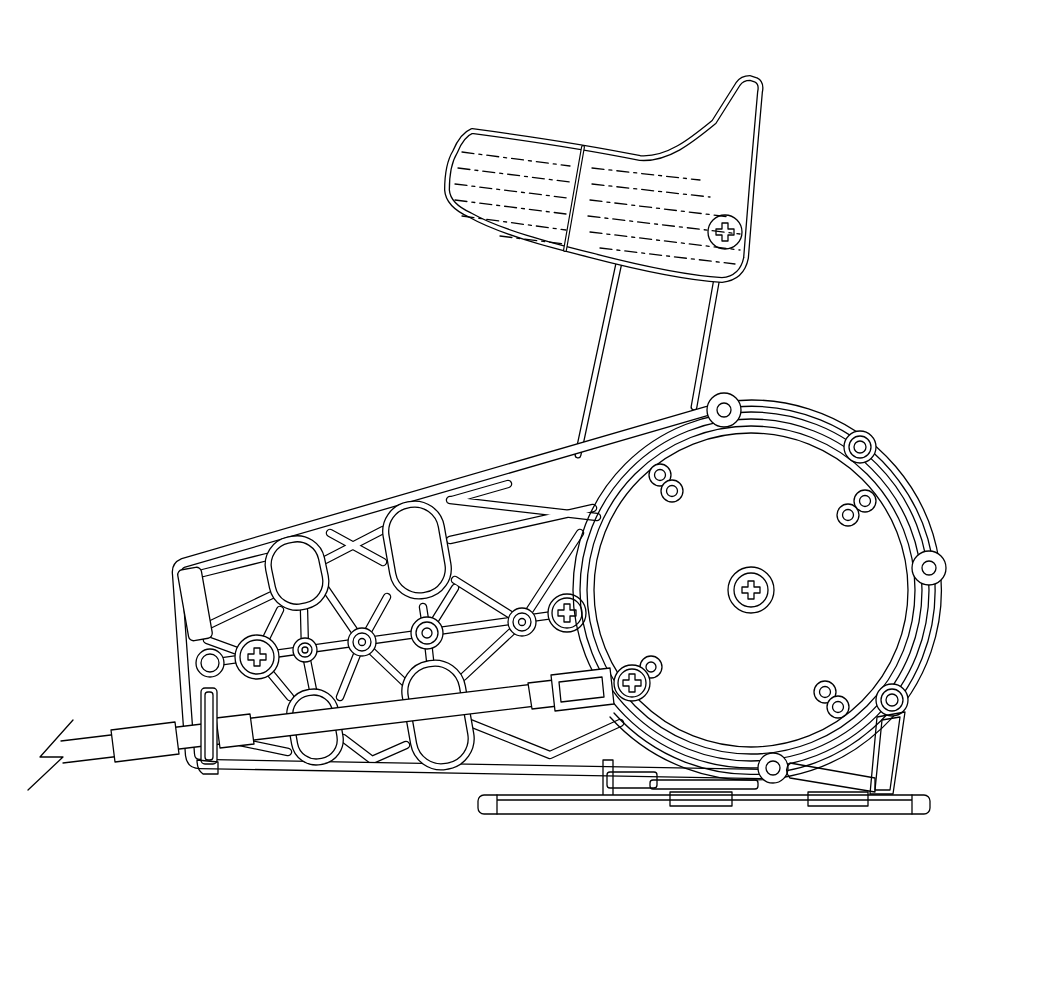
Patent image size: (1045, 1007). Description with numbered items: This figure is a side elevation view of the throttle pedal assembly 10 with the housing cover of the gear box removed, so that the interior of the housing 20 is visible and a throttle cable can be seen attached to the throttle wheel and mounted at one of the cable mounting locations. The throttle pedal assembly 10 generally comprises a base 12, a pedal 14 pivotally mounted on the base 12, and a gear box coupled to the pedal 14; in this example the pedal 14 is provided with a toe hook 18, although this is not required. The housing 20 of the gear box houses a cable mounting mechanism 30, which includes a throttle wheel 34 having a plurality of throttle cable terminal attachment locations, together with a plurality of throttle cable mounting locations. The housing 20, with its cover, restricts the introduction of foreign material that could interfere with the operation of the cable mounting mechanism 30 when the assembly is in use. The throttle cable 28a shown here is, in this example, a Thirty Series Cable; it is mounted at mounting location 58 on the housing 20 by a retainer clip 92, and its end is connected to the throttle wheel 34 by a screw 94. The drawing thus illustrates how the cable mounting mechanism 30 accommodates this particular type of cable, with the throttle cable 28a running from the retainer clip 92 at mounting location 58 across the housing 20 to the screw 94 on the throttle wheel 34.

The throttle pedal assembly 10 is at (178, 282).
The base 12 is at (478, 802).
The pedal 14 is at (690, 357).
The toe hook 18 is at (577, 162).
The housing 20 is at (460, 480).
The throttle cable 28a is at (105, 740).
The cable mounting mechanism 30 is at (842, 557).
The throttle wheel 34 is at (760, 468).
The throttle cable mounting location 58 is at (203, 716).
The retainer clip 92 is at (222, 775).
The screw 94 is at (610, 700).